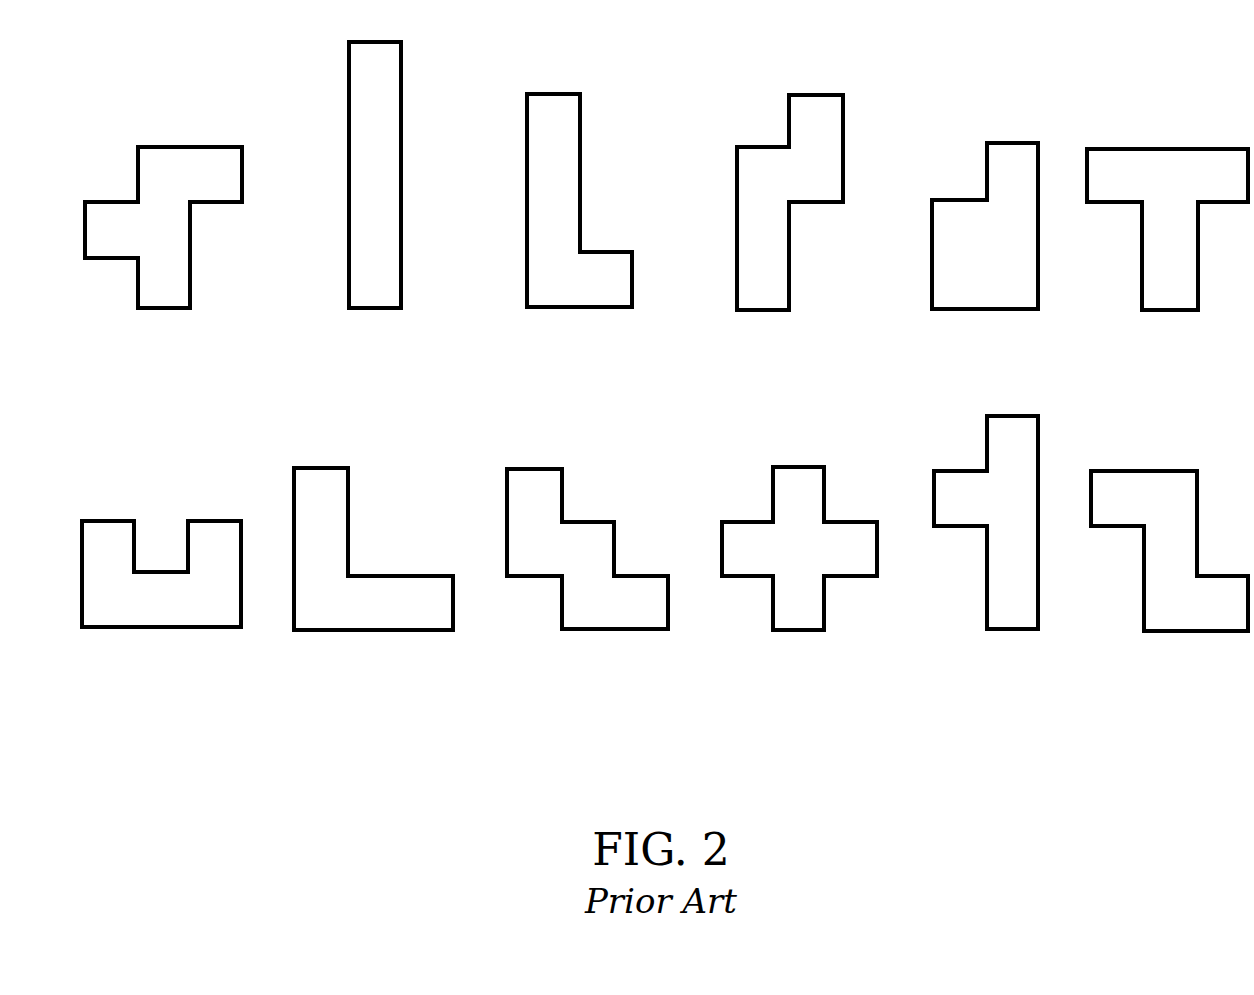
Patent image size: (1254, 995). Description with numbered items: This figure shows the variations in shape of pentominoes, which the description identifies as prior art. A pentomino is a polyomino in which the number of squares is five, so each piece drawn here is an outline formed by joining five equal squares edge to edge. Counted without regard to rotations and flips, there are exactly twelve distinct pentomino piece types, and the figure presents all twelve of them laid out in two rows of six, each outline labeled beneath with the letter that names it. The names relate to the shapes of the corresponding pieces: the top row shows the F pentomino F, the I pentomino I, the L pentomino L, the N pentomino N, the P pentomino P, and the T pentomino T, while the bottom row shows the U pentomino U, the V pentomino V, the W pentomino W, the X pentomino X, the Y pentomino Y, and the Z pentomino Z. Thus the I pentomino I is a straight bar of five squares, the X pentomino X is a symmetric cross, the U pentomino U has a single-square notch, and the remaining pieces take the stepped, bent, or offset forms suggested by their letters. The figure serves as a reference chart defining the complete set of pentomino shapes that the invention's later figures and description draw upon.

The F pentomino F is at (163, 265).
The I pentomino I is at (375, 213).
The L pentomino L is at (579, 239).
The N pentomino N is at (790, 239).
The P pentomino P is at (985, 263).
The T pentomino T is at (1167, 266).
The U pentomino U is at (161, 614).
The V pentomino V is at (373, 587).
The W pentomino W is at (587, 588).
The X pentomino X is at (799, 587).
The Y pentomino Y is at (986, 561).
The Z pentomino Z is at (1169, 589).